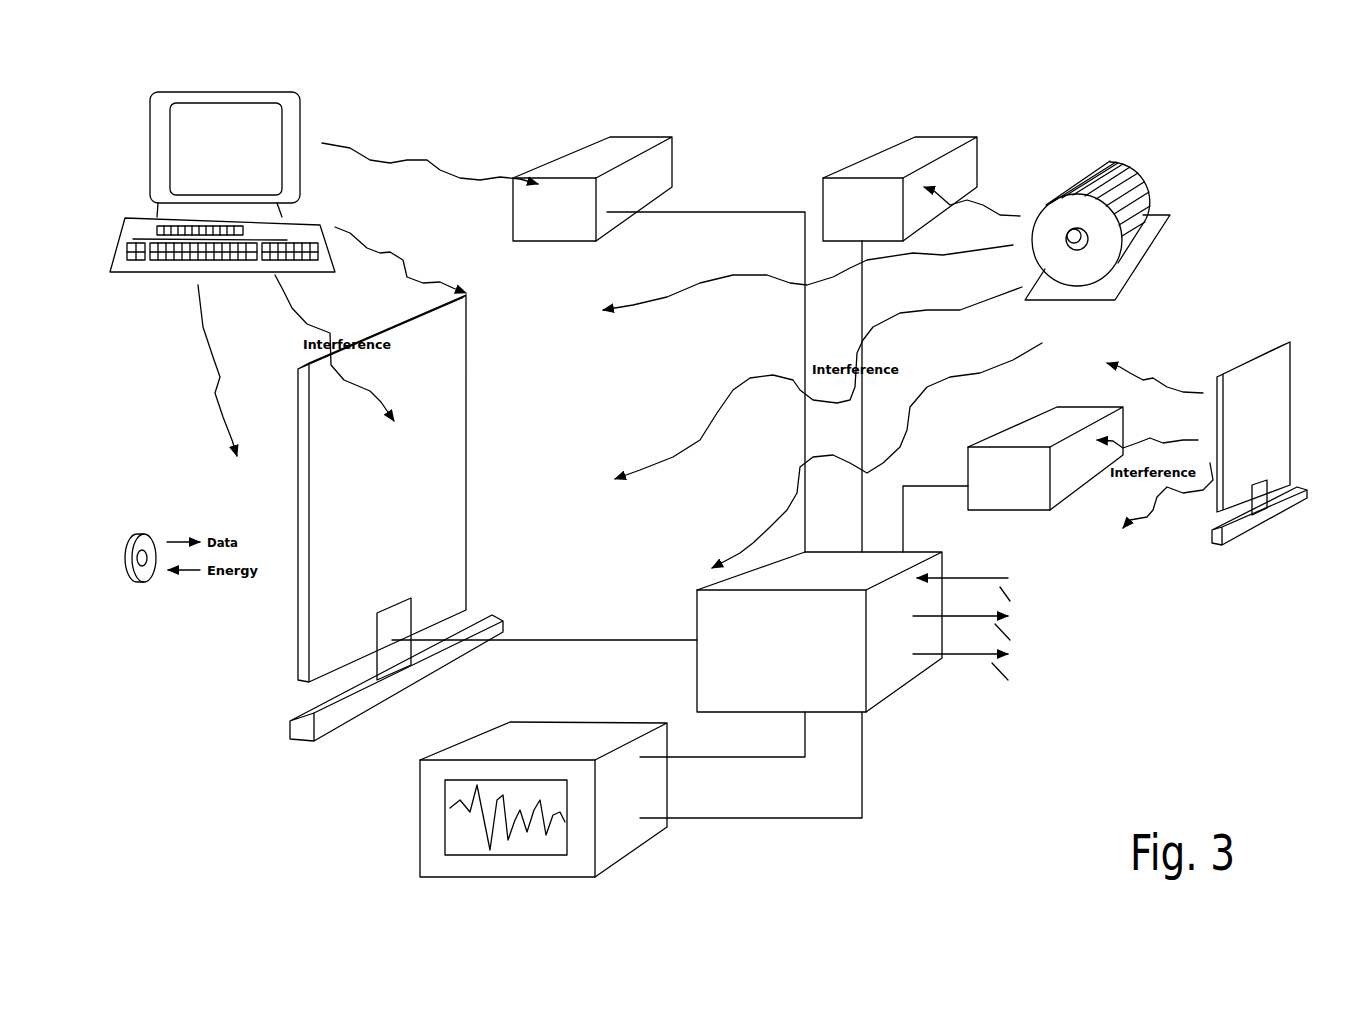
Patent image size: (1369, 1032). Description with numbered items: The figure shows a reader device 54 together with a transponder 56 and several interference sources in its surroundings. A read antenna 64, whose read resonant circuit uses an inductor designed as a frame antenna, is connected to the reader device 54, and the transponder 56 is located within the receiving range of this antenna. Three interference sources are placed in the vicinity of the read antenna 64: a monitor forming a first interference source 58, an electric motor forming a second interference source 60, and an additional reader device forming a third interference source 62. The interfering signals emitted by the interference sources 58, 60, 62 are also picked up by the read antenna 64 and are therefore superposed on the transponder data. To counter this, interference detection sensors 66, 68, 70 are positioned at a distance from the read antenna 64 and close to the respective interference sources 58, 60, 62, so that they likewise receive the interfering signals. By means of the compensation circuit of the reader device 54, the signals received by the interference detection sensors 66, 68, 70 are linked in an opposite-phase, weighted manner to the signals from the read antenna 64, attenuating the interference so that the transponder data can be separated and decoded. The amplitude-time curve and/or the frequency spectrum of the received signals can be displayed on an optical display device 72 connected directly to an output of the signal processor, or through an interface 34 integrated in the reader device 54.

The interference source 58 is at (303, 107).
The interference detection sensor 66 is at (575, 157).
The interference detection sensor 68 is at (872, 158).
The interference source 60 is at (1152, 185).
The interference source 62 is at (1300, 400).
The interference detection sensor 70 is at (1065, 413).
The read antenna 64 is at (459, 424).
The transponder 56 is at (145, 580).
The reader device 54 is at (900, 675).
The interface 34 is at (972, 658).
The optical display device 72 is at (597, 727).